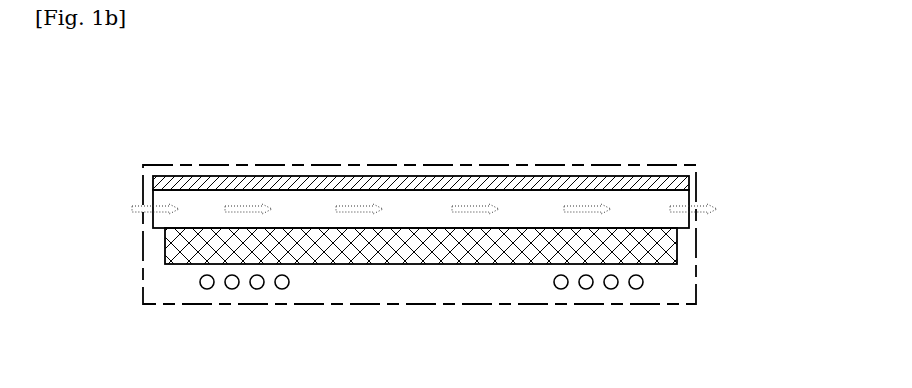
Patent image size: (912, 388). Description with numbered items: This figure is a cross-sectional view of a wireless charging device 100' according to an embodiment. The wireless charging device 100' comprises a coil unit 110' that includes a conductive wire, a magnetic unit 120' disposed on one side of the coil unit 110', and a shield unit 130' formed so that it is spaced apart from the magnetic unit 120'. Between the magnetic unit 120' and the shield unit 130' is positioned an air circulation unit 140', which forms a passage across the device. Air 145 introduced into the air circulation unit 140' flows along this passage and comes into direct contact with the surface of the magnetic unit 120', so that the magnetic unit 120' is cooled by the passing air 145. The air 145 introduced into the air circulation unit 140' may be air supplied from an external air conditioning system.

The wireless charging device 100' is at (452, 195).
The coil unit 110' is at (450, 234).
The magnetic unit 120' is at (461, 246).
The shield unit 130' is at (455, 182).
The air circulation unit 140' is at (463, 209).
The air 145 is at (352, 203).